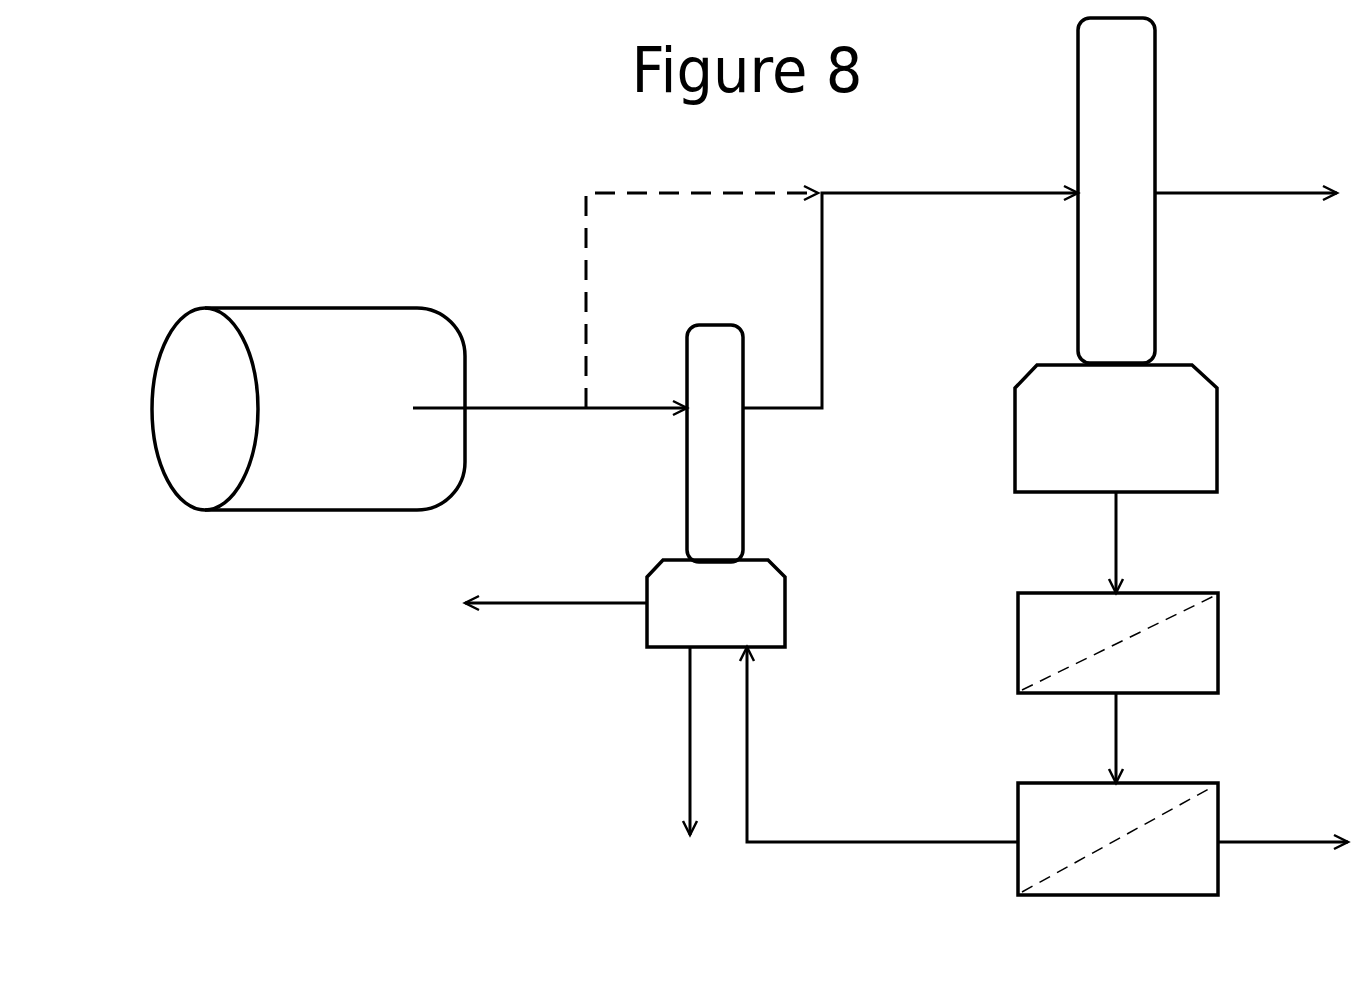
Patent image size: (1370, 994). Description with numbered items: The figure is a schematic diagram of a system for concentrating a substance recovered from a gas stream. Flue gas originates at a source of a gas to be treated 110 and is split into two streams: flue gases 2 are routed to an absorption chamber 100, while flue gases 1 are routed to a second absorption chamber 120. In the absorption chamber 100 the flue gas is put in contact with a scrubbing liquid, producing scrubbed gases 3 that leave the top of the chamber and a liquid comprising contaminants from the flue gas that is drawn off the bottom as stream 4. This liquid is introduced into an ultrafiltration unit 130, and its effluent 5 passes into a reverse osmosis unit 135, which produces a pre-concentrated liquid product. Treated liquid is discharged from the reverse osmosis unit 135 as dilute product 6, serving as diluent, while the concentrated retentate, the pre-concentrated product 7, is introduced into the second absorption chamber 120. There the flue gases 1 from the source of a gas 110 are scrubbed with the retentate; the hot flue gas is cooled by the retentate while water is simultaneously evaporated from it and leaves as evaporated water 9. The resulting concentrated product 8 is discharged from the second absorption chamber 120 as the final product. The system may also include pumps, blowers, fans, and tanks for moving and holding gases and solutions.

The source of a gas to be treated 110 is at (308, 409).
The absorption chamber 100 is at (1116, 255).
The second absorption chamber 120 is at (716, 486).
The ultrafiltration unit 130 is at (1118, 643).
The reverse osmosis unit 135 is at (1118, 839).
The flue gases 1 is at (615, 338).
The flue gases 2 is at (910, 297).
The scrubbed gases 3 is at (1246, 151).
The bottoms stream from column 100 4 is at (1193, 542).
The effluent 5 is at (1193, 738).
The dilute product 6 is at (1283, 883).
The pre-concentrated product 7 is at (879, 744).
The concentrated product 8 is at (634, 741).
The evaporated water 9 is at (511, 603).